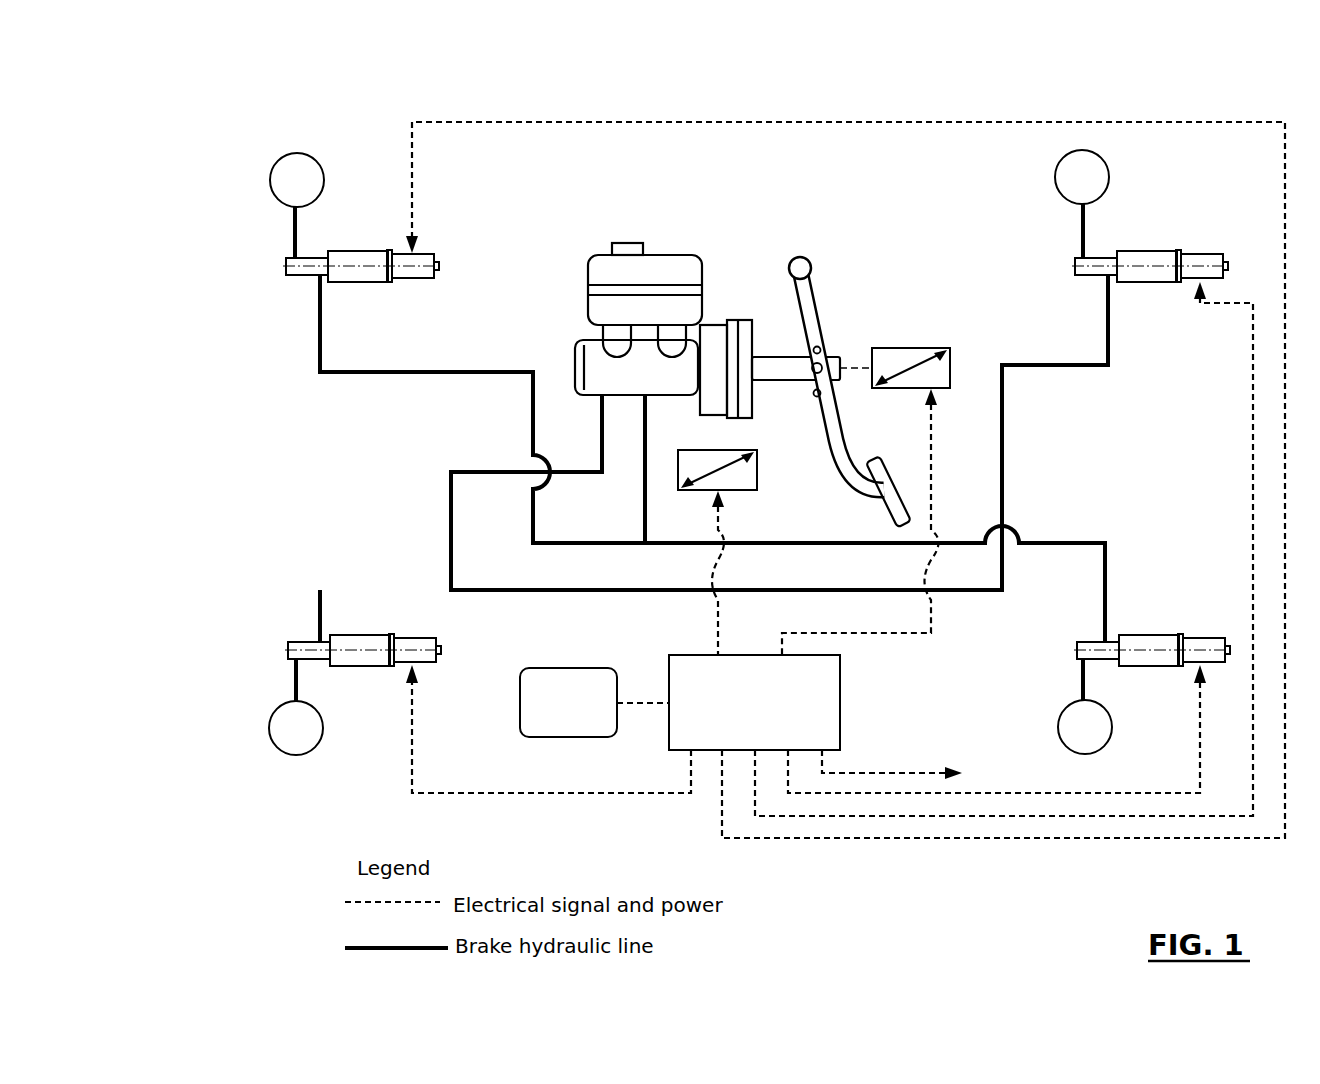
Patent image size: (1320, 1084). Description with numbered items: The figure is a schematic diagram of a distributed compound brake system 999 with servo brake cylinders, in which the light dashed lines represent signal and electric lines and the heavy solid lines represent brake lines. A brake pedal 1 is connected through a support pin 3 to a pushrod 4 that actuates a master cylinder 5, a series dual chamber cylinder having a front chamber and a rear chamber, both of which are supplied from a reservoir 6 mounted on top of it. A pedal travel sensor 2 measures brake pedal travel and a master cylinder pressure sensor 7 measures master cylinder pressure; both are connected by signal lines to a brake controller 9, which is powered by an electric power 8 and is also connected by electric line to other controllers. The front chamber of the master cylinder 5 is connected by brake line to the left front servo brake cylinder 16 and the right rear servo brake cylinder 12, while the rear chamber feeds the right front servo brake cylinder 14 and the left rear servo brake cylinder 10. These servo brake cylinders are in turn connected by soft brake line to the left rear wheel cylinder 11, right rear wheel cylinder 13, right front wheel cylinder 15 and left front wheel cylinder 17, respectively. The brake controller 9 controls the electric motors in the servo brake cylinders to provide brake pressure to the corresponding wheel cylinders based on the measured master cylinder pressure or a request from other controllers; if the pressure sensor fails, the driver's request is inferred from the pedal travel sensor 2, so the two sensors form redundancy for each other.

The distributed compound brake system 999 is at (218, 106).
The brake pedal 1 is at (898, 487).
The pedal travel sensor 2 is at (899, 347).
The support pin 3 is at (810, 372).
The pushrod 4 is at (782, 352).
The master cylinder 5 is at (567, 362).
The reservoir 6 is at (679, 251).
The master cylinder pressure sensor 7 is at (760, 471).
The electric power 8 is at (548, 668).
The brake controller 9 is at (843, 705).
The left rear servo brake cylinder 10 is at (1143, 669).
The left rear wheel cylinder 11 is at (1064, 712).
The right rear servo brake cylinder 12 is at (1144, 251).
The right rear wheel cylinder 13 is at (1112, 178).
The right front servo brake cylinder 14 is at (354, 251).
The right front wheel cylinder 15 is at (268, 181).
The left front servo brake cylinder 16 is at (352, 668).
The left front wheel cylinder 17 is at (268, 728).